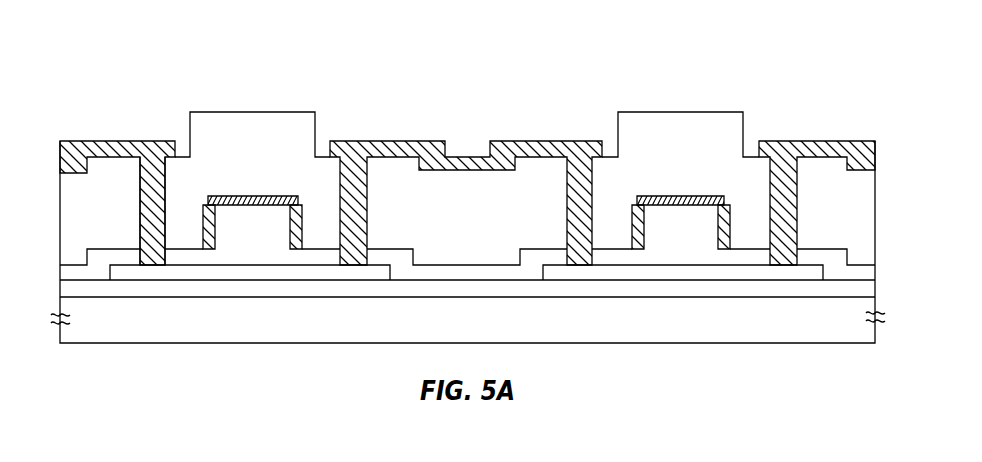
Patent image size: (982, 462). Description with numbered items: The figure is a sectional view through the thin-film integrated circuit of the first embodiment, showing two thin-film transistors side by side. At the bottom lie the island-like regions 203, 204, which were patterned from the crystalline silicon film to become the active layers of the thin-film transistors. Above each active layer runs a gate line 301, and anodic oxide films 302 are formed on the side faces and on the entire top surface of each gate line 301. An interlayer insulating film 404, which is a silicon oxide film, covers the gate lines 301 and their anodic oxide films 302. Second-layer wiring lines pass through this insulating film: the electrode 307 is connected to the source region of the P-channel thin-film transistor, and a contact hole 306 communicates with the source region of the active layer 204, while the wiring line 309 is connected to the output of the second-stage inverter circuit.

The island-like region 203 is at (313, 272).
The island-like region 204 is at (753, 270).
The gate line 301 is at (233, 237).
The anodic oxide film 302 is at (275, 195).
The contact hole 306 is at (140, 217).
The electrode 307 is at (133, 148).
The wiring line 309 is at (430, 145).
The interlayer insulating film 404 is at (642, 122).